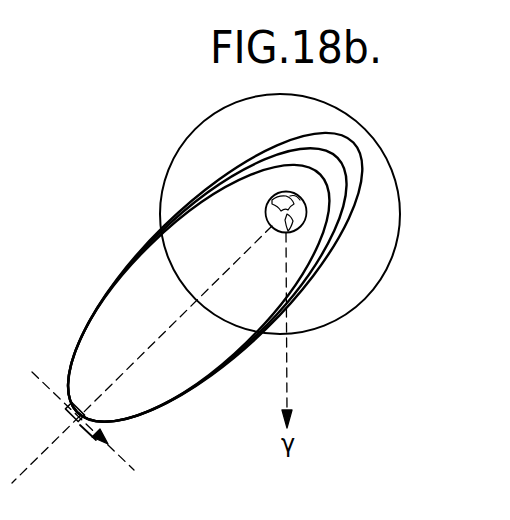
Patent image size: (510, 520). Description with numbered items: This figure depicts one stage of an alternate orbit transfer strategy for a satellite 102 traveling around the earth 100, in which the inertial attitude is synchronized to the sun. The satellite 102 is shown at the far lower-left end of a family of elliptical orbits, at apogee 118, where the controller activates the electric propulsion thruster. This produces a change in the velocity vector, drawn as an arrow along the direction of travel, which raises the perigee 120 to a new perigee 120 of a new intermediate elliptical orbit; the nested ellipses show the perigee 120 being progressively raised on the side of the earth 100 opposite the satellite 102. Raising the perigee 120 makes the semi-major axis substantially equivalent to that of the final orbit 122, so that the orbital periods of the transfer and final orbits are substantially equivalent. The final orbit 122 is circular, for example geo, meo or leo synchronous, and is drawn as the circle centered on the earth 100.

The earth 100 is at (266, 212).
The satellite 102 is at (80, 426).
The apogee 118 is at (67, 408).
The perigee 120 is at (337, 156).
The final orbit 122 is at (389, 263).